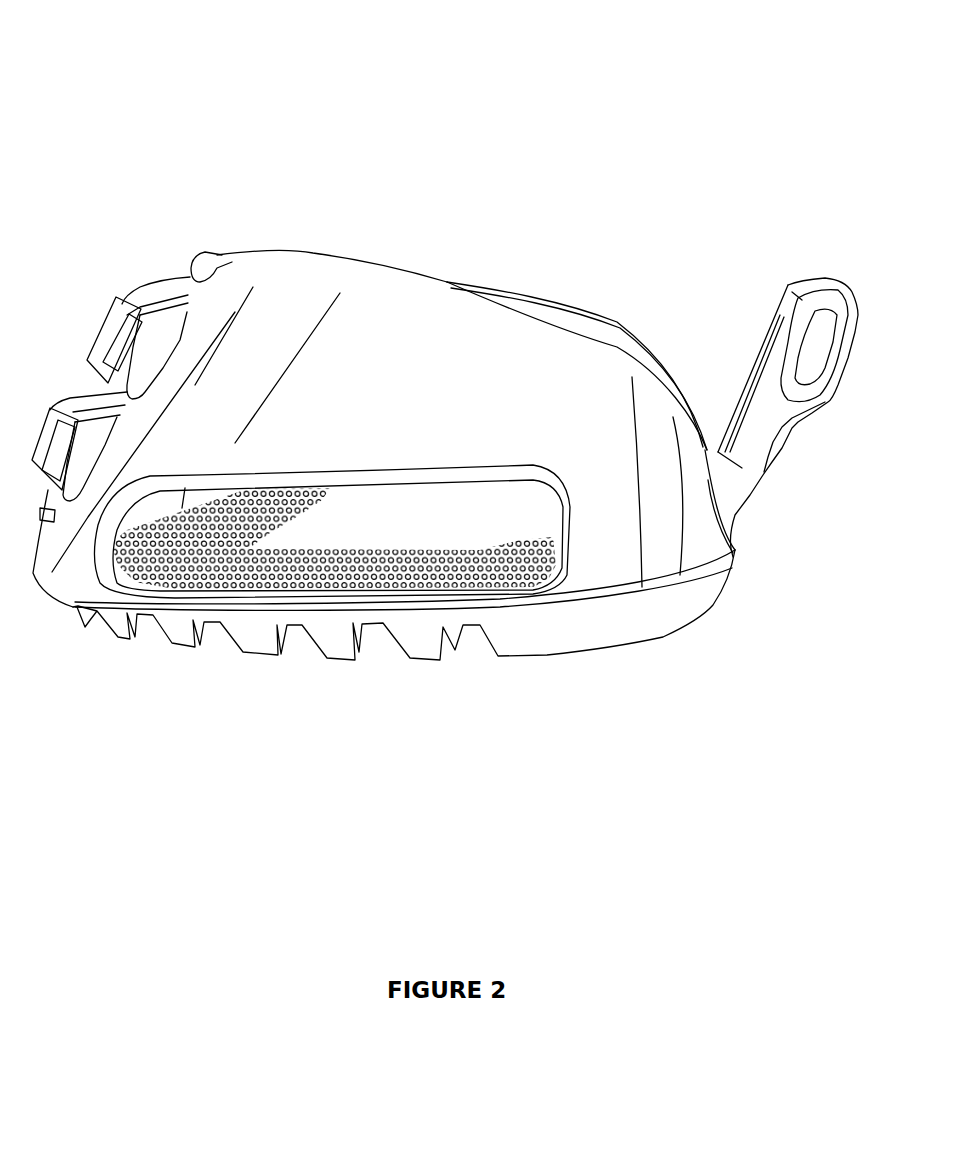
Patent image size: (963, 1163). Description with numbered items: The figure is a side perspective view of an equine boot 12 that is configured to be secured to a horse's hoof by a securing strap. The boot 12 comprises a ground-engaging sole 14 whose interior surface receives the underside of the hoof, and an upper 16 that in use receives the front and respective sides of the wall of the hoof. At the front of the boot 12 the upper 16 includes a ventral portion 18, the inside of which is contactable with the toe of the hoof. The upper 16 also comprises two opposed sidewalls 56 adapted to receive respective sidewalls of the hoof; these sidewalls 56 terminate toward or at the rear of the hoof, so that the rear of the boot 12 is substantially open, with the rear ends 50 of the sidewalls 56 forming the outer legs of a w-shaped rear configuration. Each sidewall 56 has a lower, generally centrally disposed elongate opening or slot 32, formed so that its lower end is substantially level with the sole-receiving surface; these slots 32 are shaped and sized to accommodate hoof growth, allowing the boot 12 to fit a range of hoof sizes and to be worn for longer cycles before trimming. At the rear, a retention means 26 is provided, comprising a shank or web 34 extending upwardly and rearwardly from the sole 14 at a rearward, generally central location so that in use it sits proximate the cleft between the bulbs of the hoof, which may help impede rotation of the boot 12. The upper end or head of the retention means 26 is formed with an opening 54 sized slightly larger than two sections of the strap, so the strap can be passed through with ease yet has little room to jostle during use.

The equine boot 12 is at (216, 145).
The ground-engaging sole 14 is at (545, 642).
The upper 16 is at (203, 425).
The ventral portion 18 is at (137, 245).
The retention means 26 is at (780, 345).
The elongate opening or slot 32 is at (430, 598).
The shank or web 34 is at (768, 430).
The rear end of sidewall 50 is at (688, 392).
The opening 54 is at (820, 342).
The sidewall 56 is at (597, 333).